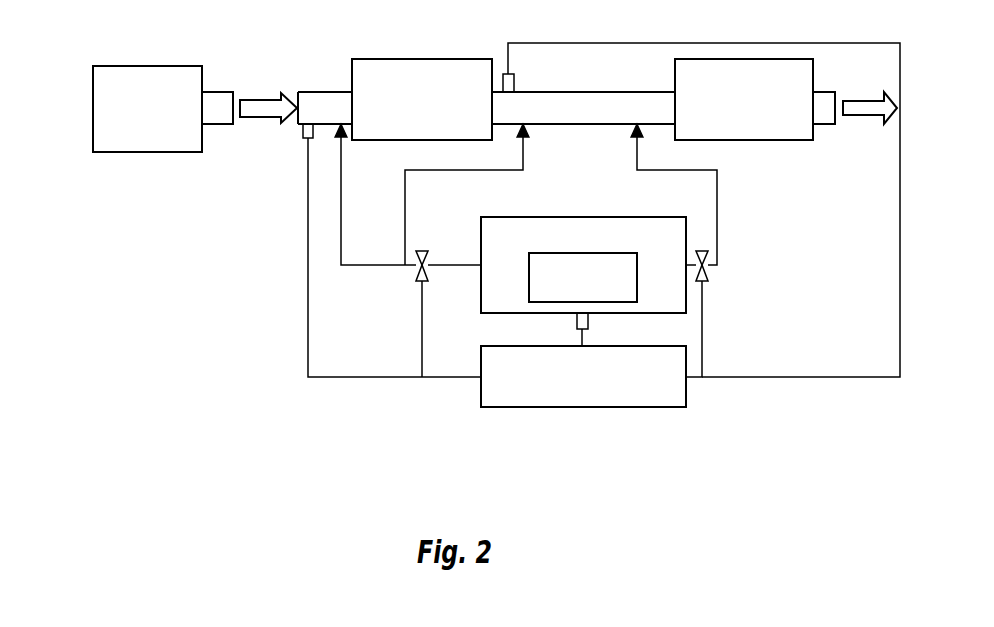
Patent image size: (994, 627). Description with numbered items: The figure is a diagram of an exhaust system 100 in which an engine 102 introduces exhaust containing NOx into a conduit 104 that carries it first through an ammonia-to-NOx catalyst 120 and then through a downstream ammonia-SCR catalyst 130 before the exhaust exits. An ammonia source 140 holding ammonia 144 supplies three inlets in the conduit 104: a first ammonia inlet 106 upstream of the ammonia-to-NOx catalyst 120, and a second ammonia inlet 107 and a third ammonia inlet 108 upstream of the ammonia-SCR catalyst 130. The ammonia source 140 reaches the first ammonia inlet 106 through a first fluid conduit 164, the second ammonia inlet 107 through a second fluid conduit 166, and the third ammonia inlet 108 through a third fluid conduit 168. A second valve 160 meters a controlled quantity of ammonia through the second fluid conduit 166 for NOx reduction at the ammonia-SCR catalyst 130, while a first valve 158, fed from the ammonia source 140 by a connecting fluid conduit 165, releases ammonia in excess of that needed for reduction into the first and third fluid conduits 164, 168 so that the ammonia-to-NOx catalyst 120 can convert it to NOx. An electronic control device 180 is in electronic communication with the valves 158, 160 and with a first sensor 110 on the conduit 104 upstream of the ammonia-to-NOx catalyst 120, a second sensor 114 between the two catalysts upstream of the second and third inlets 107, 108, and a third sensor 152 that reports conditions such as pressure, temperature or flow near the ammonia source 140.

The exhaust system 100 is at (90, 57).
The engine 102 is at (163, 101).
The conduit 104 is at (260, 73).
The first ammonia inlet 106 is at (344, 130).
The second ammonia inlet 107 is at (634, 128).
The third ammonia inlet 108 is at (527, 132).
The first sensor 110 is at (308, 150).
The second sensor 114 is at (512, 72).
The ammonia-to-NOx catalyst 120 is at (408, 95).
The ammonia-SCR catalyst 130 is at (729, 95).
The ammonia source 140 is at (569, 251).
The ammonia 144 is at (569, 286).
The third sensor 152 is at (588, 321).
The first valve 158 is at (421, 284).
The second valve 160 is at (702, 286).
The first fluid conduit 164 is at (341, 272).
The connecting fluid conduit 165 is at (448, 268).
The second fluid conduit 166 is at (712, 267).
The third fluid conduit 168 is at (405, 217).
The electronic control device 180 is at (569, 380).